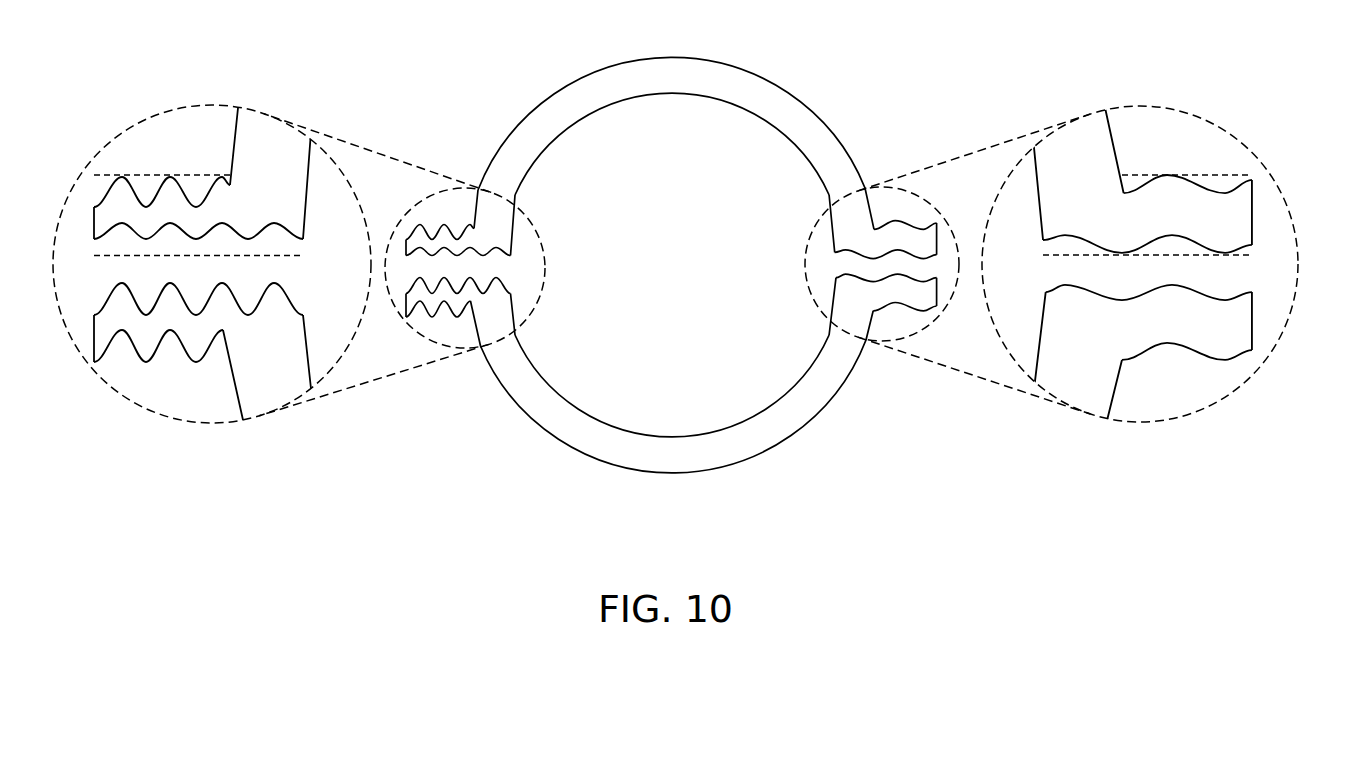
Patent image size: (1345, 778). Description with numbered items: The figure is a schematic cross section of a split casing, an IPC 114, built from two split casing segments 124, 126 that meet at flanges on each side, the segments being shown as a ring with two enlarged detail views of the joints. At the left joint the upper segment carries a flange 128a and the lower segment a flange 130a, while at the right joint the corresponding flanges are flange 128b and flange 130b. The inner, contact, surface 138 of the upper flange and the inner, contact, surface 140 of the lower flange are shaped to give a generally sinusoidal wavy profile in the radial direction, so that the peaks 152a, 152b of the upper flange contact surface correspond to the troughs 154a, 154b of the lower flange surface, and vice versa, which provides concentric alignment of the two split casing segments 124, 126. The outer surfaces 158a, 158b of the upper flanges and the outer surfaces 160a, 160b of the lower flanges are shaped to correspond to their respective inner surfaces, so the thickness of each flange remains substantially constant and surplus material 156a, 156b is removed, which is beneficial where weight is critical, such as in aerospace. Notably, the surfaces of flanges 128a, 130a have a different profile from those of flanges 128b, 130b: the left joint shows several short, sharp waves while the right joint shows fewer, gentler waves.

The IPC 114 is at (671, 247).
The split casing segment 124 is at (671, 147).
The split casing segment 126 is at (671, 373).
The flange 128a is at (202, 195).
The flange 128b is at (1179, 195).
The flange 130a is at (203, 339).
The flange 130b is at (1142, 339).
The inner contact surface 138 is at (855, 249).
The inner contact surface 140 is at (856, 268).
The peak 152a is at (248, 257).
The peak 152b is at (1123, 255).
The trough 154a is at (248, 313).
The trough 154b is at (1123, 297).
The surplus material 156a is at (104, 184).
The surplus material 156b is at (1230, 183).
The outer surface 158a is at (183, 188).
The outer surface 158b is at (1132, 192).
The outer surface 160a is at (208, 350).
The outer surface 160b is at (1133, 362).